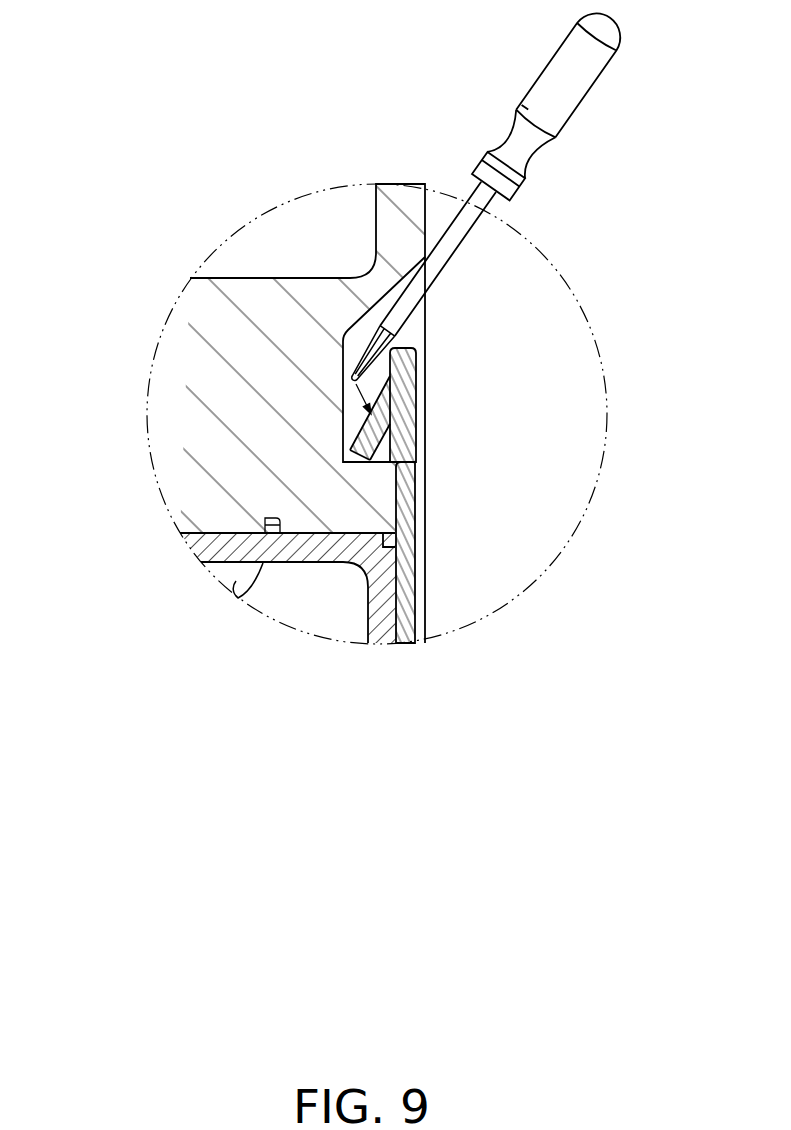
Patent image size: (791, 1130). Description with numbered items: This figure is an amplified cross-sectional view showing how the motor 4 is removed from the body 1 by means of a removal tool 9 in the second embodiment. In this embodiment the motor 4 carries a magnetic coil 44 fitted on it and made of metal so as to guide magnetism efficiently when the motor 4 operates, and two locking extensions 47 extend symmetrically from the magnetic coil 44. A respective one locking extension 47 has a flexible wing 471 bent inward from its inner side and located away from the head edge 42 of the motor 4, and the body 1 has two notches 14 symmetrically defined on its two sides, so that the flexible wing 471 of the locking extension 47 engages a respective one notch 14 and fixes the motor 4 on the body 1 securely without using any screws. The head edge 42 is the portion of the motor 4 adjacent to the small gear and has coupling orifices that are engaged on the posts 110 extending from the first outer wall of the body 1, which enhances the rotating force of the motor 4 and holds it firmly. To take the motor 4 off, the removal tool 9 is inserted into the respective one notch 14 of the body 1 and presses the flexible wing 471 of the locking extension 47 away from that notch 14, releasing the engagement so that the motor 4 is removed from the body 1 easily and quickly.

The body 1 is at (189, 365).
The removal tool 9 is at (441, 259).
The notch 14 is at (378, 461).
The locking extension 47 is at (402, 430).
The flexible wing 471 is at (390, 407).
The head edge 42 is at (227, 533).
The motor 4 is at (378, 602).
The magnetic coil 44 is at (413, 578).
The post 110 is at (233, 580).